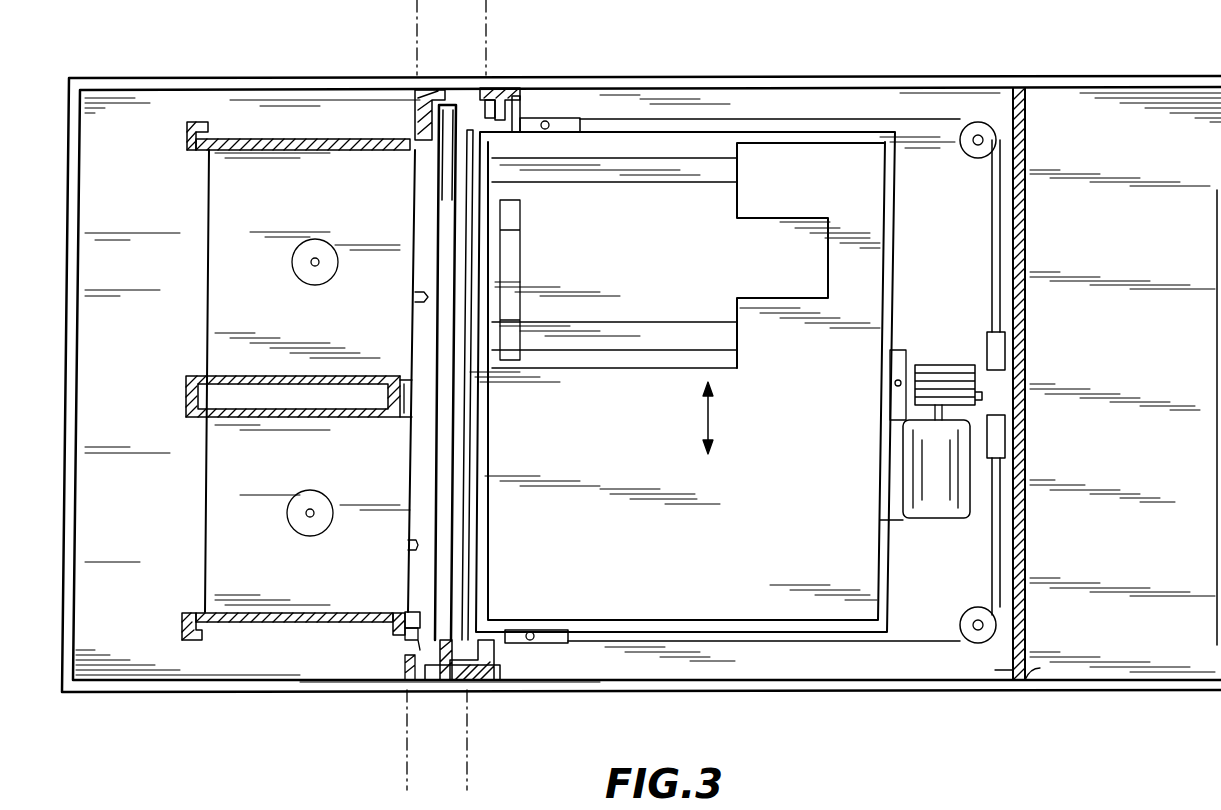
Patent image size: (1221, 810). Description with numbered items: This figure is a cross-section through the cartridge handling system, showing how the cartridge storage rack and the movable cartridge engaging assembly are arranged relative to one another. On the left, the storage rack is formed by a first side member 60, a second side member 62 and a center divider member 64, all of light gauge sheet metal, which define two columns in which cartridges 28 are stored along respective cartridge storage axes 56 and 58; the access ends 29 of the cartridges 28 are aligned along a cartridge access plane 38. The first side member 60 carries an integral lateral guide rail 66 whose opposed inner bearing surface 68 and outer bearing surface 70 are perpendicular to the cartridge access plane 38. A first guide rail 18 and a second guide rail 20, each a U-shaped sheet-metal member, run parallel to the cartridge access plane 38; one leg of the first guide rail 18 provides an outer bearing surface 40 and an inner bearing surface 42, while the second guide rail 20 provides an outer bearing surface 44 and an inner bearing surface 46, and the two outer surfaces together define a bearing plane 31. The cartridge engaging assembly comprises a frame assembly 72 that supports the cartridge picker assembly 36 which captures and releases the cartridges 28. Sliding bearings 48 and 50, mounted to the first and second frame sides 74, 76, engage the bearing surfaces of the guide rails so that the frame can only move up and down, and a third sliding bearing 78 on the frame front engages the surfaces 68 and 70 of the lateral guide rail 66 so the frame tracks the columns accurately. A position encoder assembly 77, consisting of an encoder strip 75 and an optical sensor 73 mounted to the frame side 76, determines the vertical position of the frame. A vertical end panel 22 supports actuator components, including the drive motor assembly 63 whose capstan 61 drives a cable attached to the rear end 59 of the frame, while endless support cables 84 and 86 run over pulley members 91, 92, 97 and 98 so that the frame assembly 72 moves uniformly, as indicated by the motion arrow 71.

The first guide rail 18 is at (415, 680).
The second guide rail 20 is at (425, 92).
The vertical end panel 22 is at (1022, 684).
The cartridges 28 is at (206, 320).
The access ends 29 is at (414, 298).
The bearing plane 31 is at (467, 765).
The cartridge picker assembly 36 is at (640, 368).
The cartridge access plane 38 is at (476, 450).
The outer bearing surface 40 is at (482, 666).
The inner bearing surface 42 is at (450, 680).
The outer bearing surface 44 is at (500, 92).
The inner bearing surface 46 is at (460, 95).
The sliding bearing 48 is at (496, 632).
The sliding bearing 50 is at (528, 120).
The cartridge storage axis 56 is at (312, 511).
The cartridge storage axis 58 is at (318, 260).
The rear end 59 is at (893, 256).
The first side member 60 is at (182, 626).
The capstan 61 is at (944, 364).
The second side member 62 is at (186, 130).
The drive motor assembly 63 is at (946, 520).
The center divider member 64 is at (402, 376).
The lateral guide rail 66 is at (395, 630).
The inner bearing surface 68 is at (405, 612).
The outer bearing surface 70 is at (412, 640).
The direction of motion arrow 71 is at (712, 418).
The frame assembly 72 is at (663, 474).
The optical sensor 73 is at (525, 118).
The first frame side 74 is at (648, 620).
The encoder strip 75 is at (510, 108).
The second frame side 76 is at (797, 146).
The position encoder assembly 77 is at (476, 62).
The third sliding bearing 78 is at (405, 672).
The first endless support cable 84 is at (1002, 520).
The second endless support cable 86 is at (1001, 222).
The pulley member 91 is at (1008, 432).
The pulley member 92 is at (1000, 624).
The pulley member 97 is at (1008, 350).
The pulley member 98 is at (1000, 137).